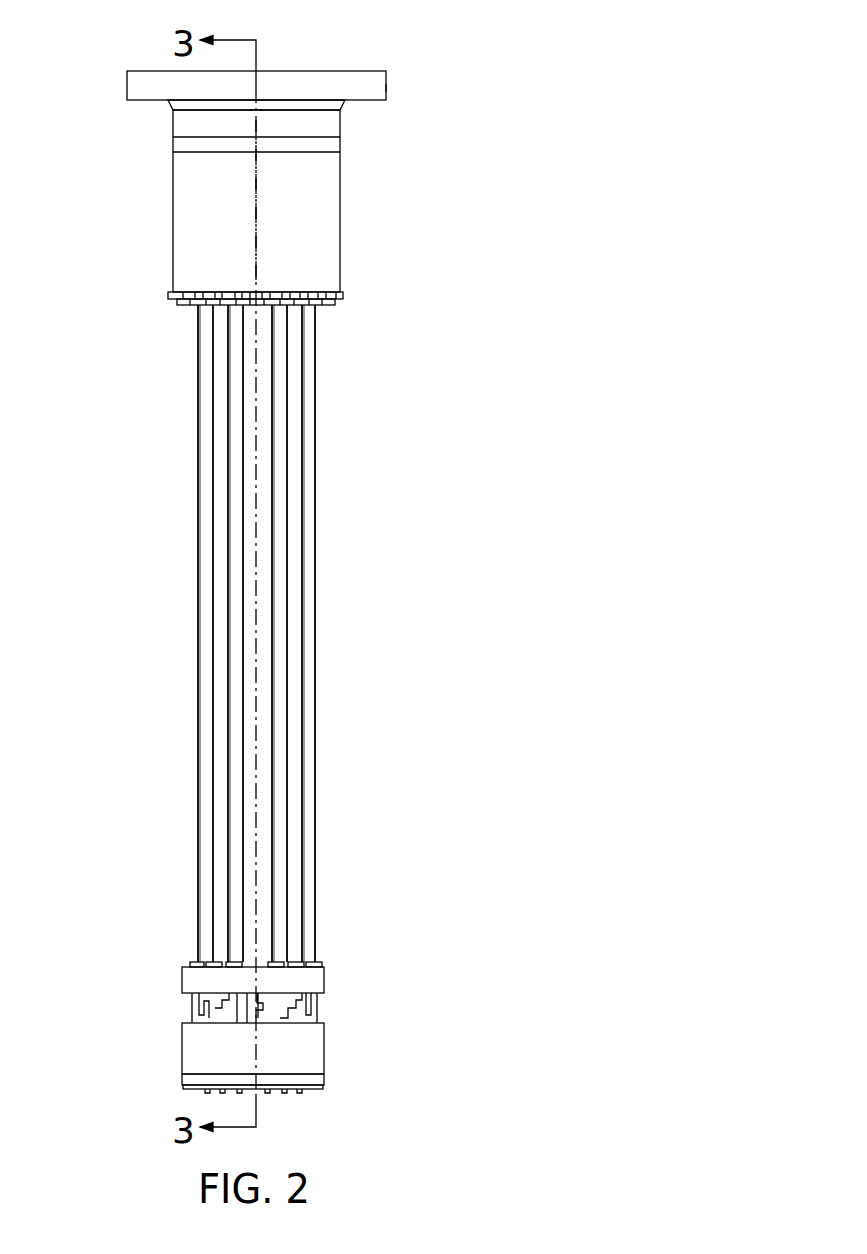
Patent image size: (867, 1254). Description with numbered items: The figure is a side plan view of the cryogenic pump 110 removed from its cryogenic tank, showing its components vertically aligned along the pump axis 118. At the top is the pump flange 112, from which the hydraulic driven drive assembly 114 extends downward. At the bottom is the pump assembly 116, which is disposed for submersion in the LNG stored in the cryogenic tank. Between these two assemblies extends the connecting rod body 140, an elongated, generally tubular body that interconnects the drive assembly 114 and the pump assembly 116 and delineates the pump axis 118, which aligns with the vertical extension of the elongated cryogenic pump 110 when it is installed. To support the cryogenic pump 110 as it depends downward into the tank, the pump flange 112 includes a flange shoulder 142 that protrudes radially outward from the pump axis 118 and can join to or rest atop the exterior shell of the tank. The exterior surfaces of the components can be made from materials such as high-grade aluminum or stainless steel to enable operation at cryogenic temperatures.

The cryogenic pump 110 is at (145, 365).
The pump flange 112 is at (330, 71).
The drive assembly 114 is at (340, 213).
The pump assembly 116 is at (324, 1030).
The pump axis 118 is at (256, 191).
The connecting rod body 140 is at (315, 620).
The flange shoulder 142 is at (386, 88).